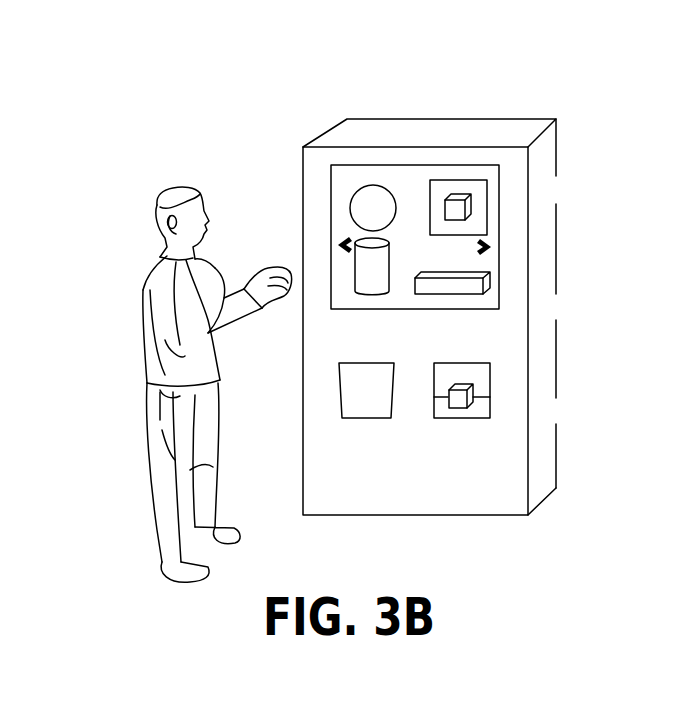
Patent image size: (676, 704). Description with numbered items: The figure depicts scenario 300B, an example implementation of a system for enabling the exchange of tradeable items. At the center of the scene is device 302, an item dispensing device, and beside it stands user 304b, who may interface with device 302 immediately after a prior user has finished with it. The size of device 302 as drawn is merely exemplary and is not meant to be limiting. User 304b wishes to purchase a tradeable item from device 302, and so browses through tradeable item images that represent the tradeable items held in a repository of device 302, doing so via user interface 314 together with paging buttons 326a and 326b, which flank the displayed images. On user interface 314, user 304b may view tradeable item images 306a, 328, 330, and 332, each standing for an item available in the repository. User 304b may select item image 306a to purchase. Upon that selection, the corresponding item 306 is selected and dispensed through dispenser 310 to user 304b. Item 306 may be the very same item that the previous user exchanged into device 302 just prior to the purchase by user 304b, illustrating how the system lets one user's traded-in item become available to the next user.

The scenario 300B is at (136, 72).
The device 302 is at (438, 118).
The user 304b is at (142, 277).
The item 306 is at (458, 409).
The item image 306a is at (471, 210).
The dispenser 310 is at (491, 381).
The user interface 314 is at (382, 163).
The paging button 326a is at (343, 237).
The paging button 326b is at (492, 248).
The tradeable item image 328 is at (356, 193).
The tradeable item image 330 is at (355, 272).
The tradeable item image 332 is at (488, 281).